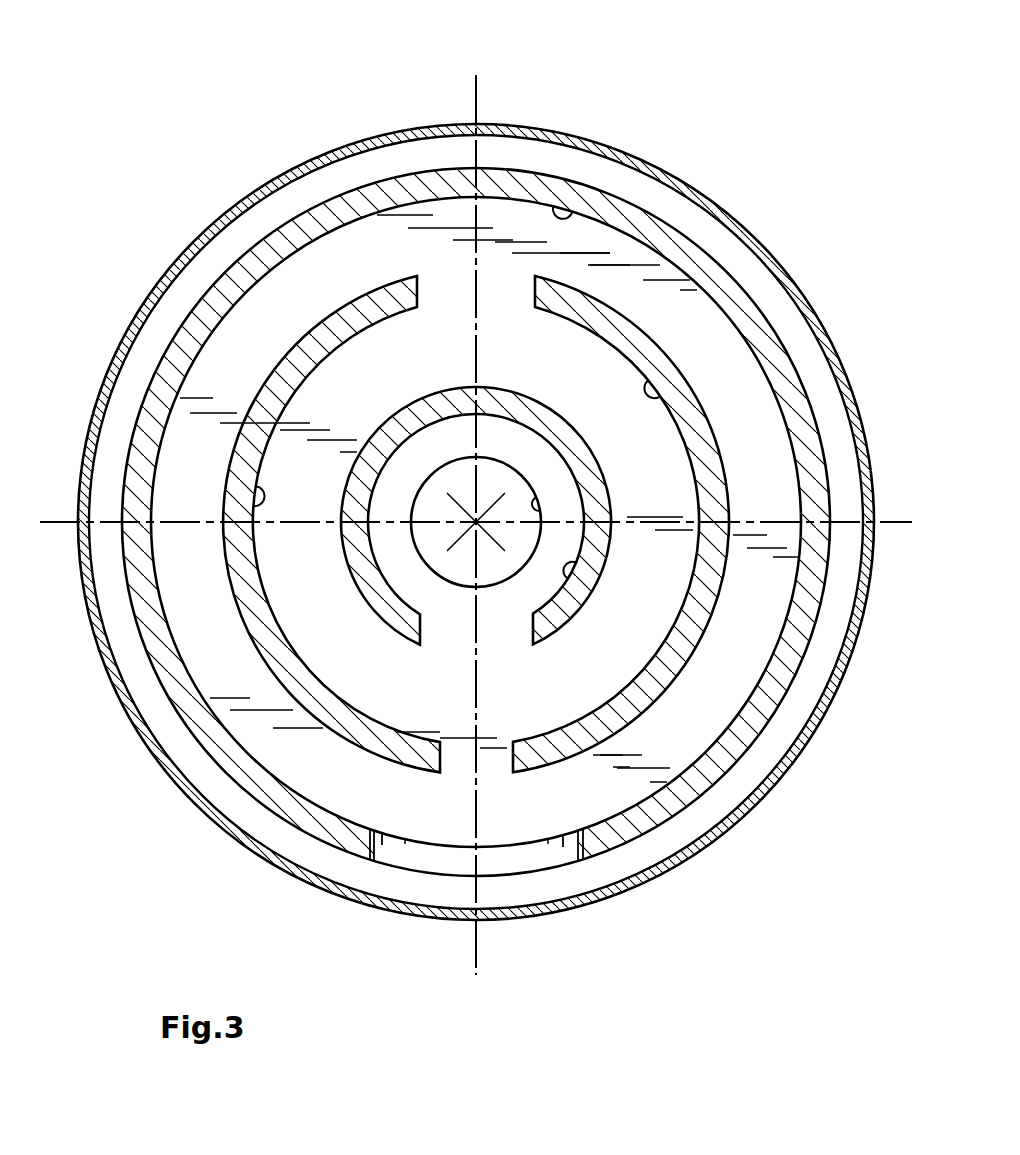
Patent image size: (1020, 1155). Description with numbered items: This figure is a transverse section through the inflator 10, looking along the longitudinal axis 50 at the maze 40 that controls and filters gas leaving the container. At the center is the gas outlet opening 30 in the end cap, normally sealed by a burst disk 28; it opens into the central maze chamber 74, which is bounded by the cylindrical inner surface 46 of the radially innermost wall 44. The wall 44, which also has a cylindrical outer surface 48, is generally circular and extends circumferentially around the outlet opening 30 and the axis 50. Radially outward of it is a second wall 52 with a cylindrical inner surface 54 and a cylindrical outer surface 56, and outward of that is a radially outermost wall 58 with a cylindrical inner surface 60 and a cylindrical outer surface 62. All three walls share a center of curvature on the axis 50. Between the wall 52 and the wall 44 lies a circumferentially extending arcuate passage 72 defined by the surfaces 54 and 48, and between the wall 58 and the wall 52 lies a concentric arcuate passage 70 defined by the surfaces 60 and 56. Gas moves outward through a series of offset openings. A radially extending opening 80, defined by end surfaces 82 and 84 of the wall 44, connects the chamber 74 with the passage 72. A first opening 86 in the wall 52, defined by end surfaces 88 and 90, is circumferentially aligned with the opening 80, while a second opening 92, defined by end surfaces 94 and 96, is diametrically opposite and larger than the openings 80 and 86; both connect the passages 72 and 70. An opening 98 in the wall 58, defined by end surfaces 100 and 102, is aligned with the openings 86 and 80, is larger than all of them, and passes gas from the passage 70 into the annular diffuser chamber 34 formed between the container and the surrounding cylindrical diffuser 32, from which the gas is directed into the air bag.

The inflator 10 is at (348, 98).
The burst disk 28 is at (435, 508).
The gas outlet opening 30 is at (540, 512).
The diffuser 32 is at (310, 157).
The annular diffuser chamber 34 is at (430, 155).
The maze 40 is at (255, 240).
The radially innermost wall 44 is at (600, 550).
The cylindrical inner surface 46 is at (532, 593).
The cylindrical outer surface 48 is at (610, 487).
The longitudinal axis 50 is at (478, 520).
The second wall 52 is at (650, 373).
The cylindrical inner surface 54 is at (642, 349).
The cylindrical outer surface 56 is at (640, 347).
The radially outermost wall 58 is at (528, 188).
The cylindrical inner surface 60 is at (587, 260).
The cylindrical outer surface 62 is at (495, 167).
The arcuate passage 70 is at (610, 300).
The arcuate passage 72 is at (650, 443).
The central maze chamber 74 is at (567, 590).
The radially extending opening 80 is at (470, 641).
The end surface 82 is at (420, 641).
The end surface 84 is at (532, 633).
The first opening 86 is at (482, 760).
The end surface 88 is at (440, 766).
The end surface 90 is at (513, 766).
The second opening 92 is at (468, 292).
The end surface 94 is at (418, 287).
The end surface 96 is at (538, 292).
The opening 98 is at (427, 860).
The end surface 100 is at (388, 858).
The end surface 102 is at (563, 860).